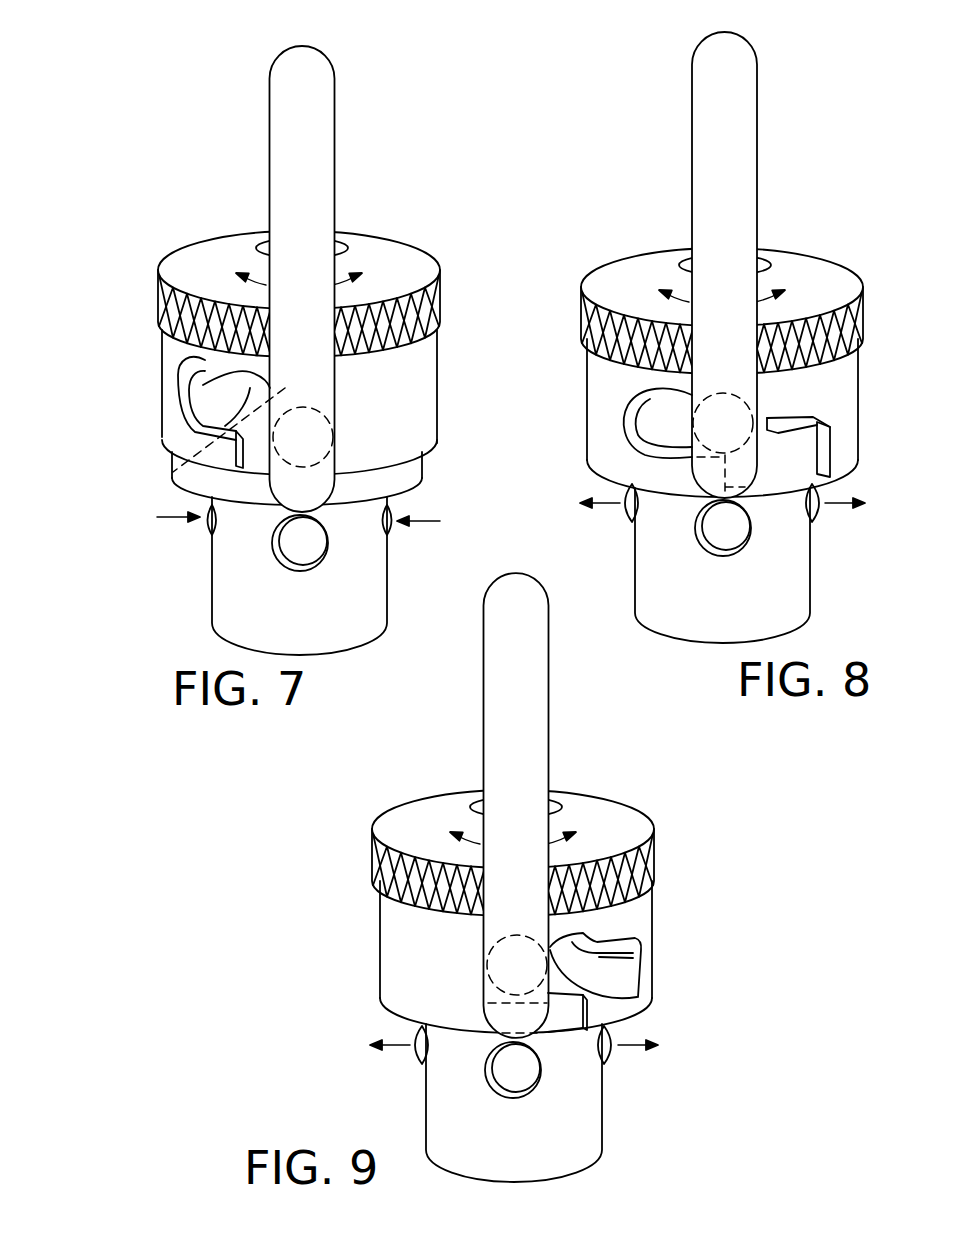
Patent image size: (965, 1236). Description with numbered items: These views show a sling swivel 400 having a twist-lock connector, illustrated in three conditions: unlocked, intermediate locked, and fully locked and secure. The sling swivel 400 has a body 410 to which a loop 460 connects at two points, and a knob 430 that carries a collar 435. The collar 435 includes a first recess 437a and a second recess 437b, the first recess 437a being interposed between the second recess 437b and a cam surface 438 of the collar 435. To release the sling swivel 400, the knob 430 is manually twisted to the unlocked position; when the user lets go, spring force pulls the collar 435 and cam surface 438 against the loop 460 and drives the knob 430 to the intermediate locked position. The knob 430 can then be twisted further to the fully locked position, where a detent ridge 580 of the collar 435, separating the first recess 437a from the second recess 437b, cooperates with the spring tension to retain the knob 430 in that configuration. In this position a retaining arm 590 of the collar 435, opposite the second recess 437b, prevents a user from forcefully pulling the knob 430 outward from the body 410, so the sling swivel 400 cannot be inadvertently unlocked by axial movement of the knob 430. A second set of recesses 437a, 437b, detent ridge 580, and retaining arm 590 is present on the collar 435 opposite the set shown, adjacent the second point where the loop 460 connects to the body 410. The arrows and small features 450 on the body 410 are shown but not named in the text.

In FIG. 7, the sling swivel 400 is at (141, 189).
In FIG. 8, the sling swivel 400 is at (852, 148).
In FIG. 9, the sling swivel 400 is at (292, 990).
In FIG. 7, the body 410 is at (377, 583).
In FIG. 8, the body 410 is at (800, 603).
In FIG. 9, the body 410 is at (592, 1143).
In FIG. 7, the knob 430 is at (390, 258).
In FIG. 8, the knob 430 is at (812, 278).
In FIG. 9, the knob 430 is at (605, 822).
In FIG. 7, the collar 435 is at (414, 367).
In FIG. 8, the collar 435 is at (594, 404).
In FIG. 9, the collar 435 is at (653, 918).
In FIG. 7, the first recess 437a is at (215, 386).
In FIG. 8, the first recess 437a is at (798, 440).
In FIG. 9, the first recess 437a is at (650, 958).
In FIG. 7, the second recess 437b is at (196, 376).
In FIG. 8, the second recess 437b is at (655, 400).
In FIG. 9, the second recess 437b is at (483, 963).
In FIG. 7, the cam surface 438 is at (168, 470).
In FIG. 8, the cam surface 438 is at (820, 423).
In FIG. 9, the cam surface 438 is at (652, 946).
In FIG. 7, the locking detents 450 is at (207, 527).
In FIG. 8, the locking detents 450 is at (623, 517).
In FIG. 9, the locking detents 450 is at (413, 1055).
In FIG. 7, the loop 460 is at (326, 50).
In FIG. 8, the loop 460 is at (757, 52).
In FIG. 9, the loop 460 is at (549, 703).
In FIG. 7, the detent ridge 580 is at (203, 388).
In FIG. 8, the detent ridge 580 is at (677, 407).
In FIG. 9, the detent ridge 580 is at (630, 1005).
In FIG. 7, the retaining arm 590 is at (213, 458).
In FIG. 8, the retaining arm 590 is at (675, 483).
In FIG. 9, the retaining arm 590 is at (565, 1023).